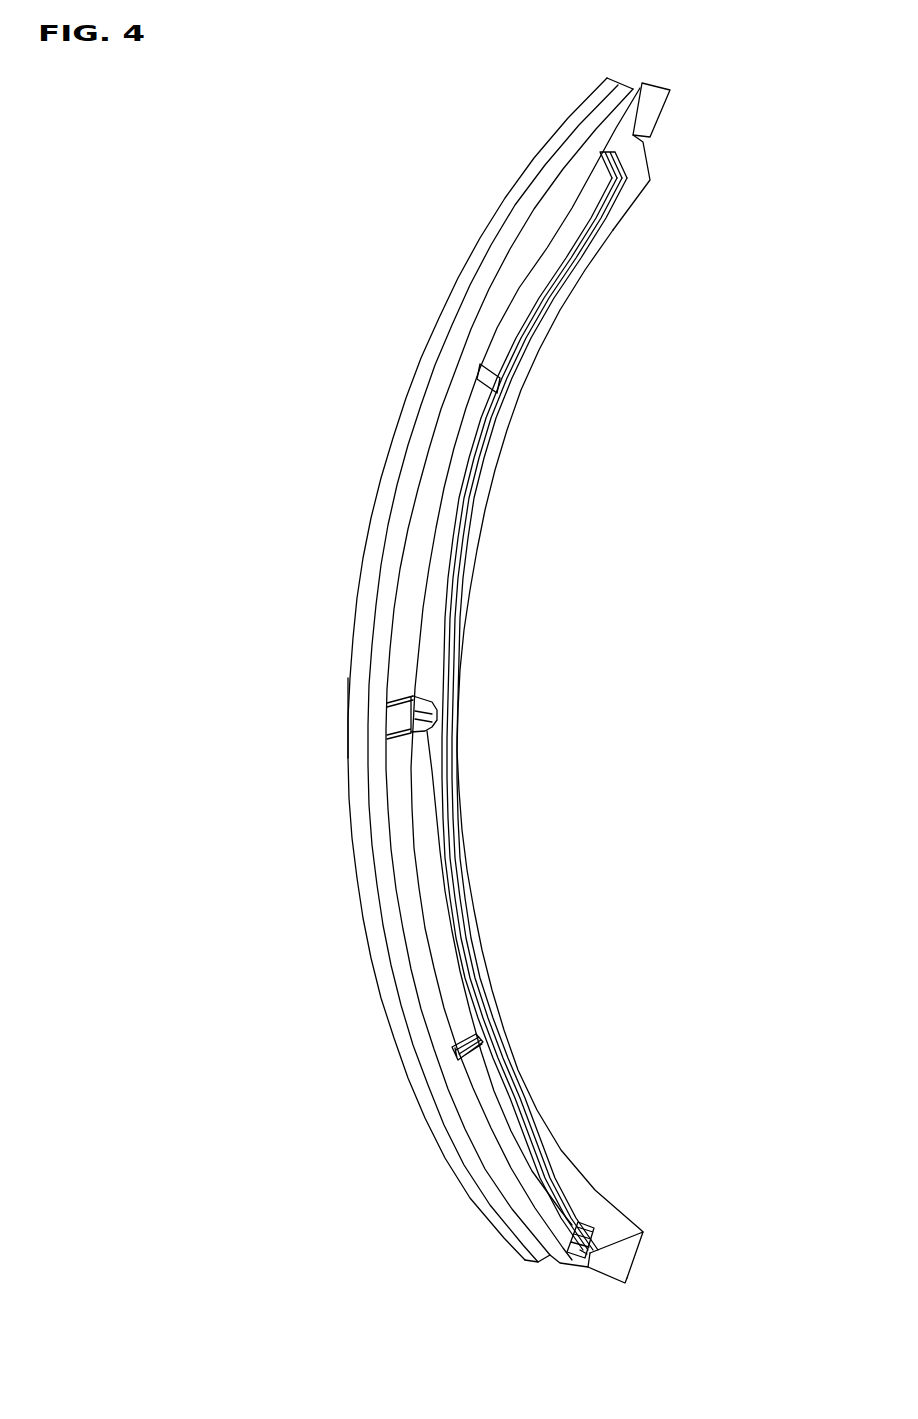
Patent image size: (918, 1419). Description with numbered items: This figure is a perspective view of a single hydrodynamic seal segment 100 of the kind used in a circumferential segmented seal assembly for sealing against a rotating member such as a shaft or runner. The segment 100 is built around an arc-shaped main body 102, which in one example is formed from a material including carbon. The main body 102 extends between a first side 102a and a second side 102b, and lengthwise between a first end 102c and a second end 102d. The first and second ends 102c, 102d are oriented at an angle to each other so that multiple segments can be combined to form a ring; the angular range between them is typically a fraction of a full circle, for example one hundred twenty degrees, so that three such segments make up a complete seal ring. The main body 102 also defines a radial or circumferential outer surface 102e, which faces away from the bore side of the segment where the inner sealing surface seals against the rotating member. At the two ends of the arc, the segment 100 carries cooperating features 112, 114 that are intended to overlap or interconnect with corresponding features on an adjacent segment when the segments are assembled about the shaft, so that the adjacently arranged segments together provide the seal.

The segment 100 is at (250, 378).
The main body 102 is at (401, 418).
The first side 102a is at (425, 823).
The second side 102b is at (347, 718).
The first end 102c is at (633, 1266).
The second end 102d is at (670, 91).
The radial outer surface 102e is at (363, 650).
The cooperating feature 112 is at (593, 1272).
The cooperating feature 114 is at (648, 137).